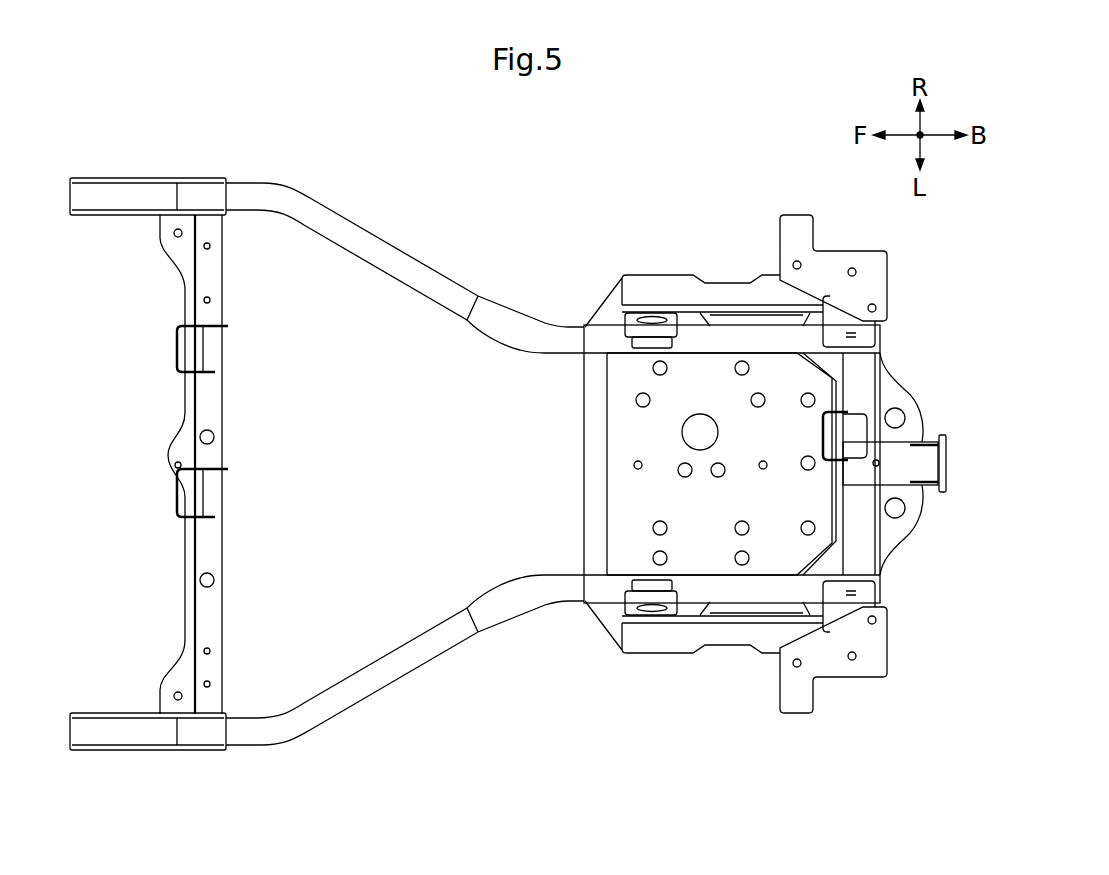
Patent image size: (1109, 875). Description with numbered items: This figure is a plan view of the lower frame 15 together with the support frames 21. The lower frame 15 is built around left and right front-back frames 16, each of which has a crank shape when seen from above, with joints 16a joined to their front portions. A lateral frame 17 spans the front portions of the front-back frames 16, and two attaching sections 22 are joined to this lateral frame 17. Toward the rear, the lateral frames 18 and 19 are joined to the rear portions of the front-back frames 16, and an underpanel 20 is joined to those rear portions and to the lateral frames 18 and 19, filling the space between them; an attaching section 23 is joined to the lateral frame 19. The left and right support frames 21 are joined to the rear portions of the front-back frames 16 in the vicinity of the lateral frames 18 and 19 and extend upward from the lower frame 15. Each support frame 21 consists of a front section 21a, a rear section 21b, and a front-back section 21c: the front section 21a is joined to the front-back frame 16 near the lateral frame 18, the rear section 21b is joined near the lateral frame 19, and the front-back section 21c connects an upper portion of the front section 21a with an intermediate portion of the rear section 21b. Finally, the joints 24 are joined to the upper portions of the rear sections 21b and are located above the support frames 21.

The lower frame 15 is at (612, 168).
The front-back frame 16 is at (386, 243).
The joint 16a is at (125, 178).
The lateral frame 17 is at (213, 608).
The lateral frame 18 is at (595, 413).
The lateral frame 19 is at (867, 527).
The underpanel 20 is at (650, 503).
The support frame 21 is at (745, 469).
The front section 21a is at (622, 326).
The rear section 21b is at (935, 623).
The front-back section 21c is at (723, 290).
The attaching section 22 is at (177, 352).
The attaching section 23 is at (868, 418).
The joint 24 is at (837, 262).